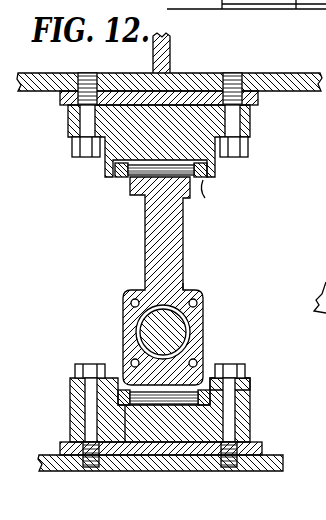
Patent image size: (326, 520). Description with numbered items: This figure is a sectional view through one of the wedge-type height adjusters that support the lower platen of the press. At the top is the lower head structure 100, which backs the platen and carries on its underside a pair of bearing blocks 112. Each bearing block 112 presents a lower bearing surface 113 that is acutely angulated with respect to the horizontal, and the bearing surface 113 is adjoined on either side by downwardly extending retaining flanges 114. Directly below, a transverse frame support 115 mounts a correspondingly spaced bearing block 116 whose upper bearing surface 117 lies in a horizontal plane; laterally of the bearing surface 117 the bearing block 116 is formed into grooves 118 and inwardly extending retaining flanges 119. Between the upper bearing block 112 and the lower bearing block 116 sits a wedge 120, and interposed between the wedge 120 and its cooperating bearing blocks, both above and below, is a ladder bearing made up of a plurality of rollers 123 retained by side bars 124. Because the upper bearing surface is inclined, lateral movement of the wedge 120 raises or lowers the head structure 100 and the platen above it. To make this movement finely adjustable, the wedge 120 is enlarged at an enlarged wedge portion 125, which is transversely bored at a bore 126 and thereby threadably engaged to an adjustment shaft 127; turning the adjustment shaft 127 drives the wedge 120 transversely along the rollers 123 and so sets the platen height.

The head structure 100 is at (171, 55).
The bearing block 112 is at (106, 163).
The lower bearing surface 113 is at (150, 163).
The retaining flange 114 is at (214, 168).
The transverse frame support 115 is at (68, 476).
The bearing block 116 is at (253, 430).
The upper bearing surface 117 is at (198, 407).
The groove 118 is at (120, 388).
The retaining flange 119 is at (204, 371).
The wedge 120 is at (183, 241).
The roller 123 is at (153, 178).
The side bar 124 is at (128, 397).
The enlarged wedge portion 125 is at (203, 313).
The transverse bore 126 is at (184, 280).
The adjustment shaft 127 is at (184, 341).